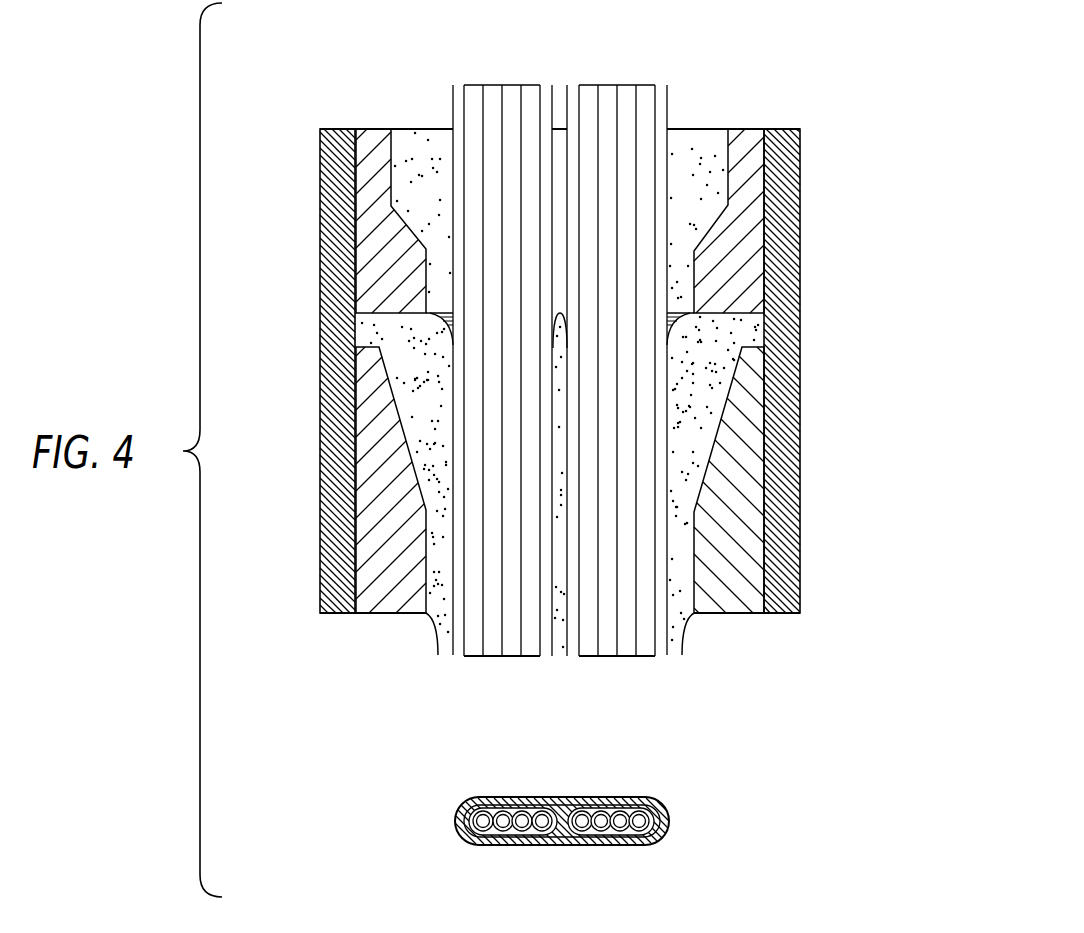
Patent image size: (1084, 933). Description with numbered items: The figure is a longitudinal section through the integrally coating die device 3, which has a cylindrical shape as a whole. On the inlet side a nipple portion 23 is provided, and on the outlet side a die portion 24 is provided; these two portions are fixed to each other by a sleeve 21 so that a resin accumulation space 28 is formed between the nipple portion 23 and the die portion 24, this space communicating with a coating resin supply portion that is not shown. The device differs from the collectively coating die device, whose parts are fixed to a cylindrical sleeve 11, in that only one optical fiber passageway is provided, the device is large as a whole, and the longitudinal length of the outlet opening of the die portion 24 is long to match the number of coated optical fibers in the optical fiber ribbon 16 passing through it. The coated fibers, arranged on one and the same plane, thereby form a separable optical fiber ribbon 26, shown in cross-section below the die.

The integrally coating die device 3 is at (824, 97).
The cylindrical sleeve 11 is at (332, 210).
The sleeve 21 is at (787, 213).
The nipple portion 23 is at (375, 142).
The die portion 24 is at (373, 457).
The resin accumulation space 28 is at (385, 330).
The optical fiber ribbon 16 is at (655, 73).
The separable optical fiber ribbon 26 is at (670, 818).